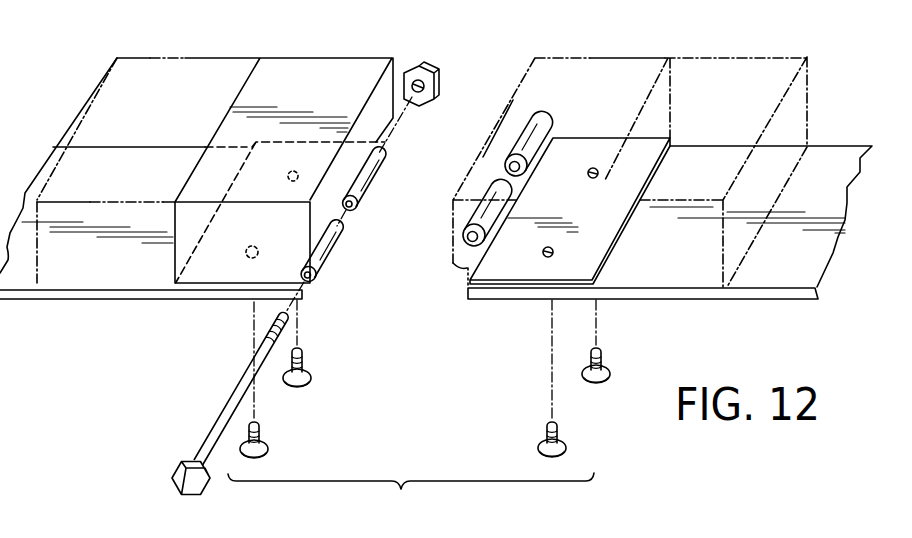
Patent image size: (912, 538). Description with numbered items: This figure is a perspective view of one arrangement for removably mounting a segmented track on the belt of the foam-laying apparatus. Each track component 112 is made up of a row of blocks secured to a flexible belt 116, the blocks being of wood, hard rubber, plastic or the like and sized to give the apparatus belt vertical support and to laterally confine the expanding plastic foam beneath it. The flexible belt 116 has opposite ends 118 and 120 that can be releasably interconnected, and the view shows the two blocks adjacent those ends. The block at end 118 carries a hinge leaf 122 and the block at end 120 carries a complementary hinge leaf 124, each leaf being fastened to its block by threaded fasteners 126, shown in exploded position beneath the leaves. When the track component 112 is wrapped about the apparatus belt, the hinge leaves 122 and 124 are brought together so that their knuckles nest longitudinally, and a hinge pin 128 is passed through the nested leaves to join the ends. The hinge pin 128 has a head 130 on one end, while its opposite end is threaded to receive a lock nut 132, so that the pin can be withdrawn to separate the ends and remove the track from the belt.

The track component 112 is at (346, 57).
The flexible belt 116 is at (831, 146).
The belt end 118 is at (232, 298).
The belt end 120 is at (491, 300).
The hinge leaf 122 is at (204, 291).
The hinge leaf 124 is at (527, 288).
The threaded fastener 126 is at (259, 428).
The hinge pin 128 is at (230, 397).
The head 130 is at (178, 474).
The lock nut 132 is at (427, 64).